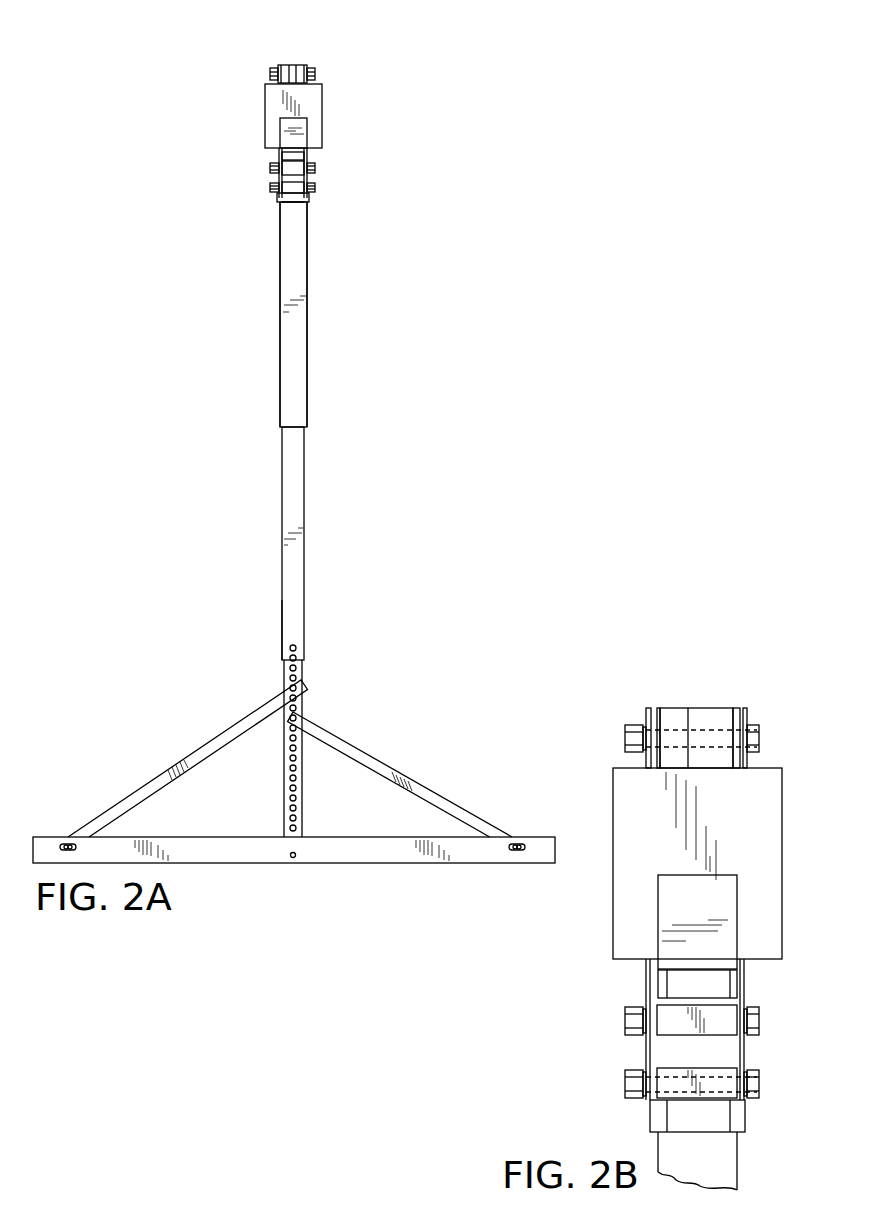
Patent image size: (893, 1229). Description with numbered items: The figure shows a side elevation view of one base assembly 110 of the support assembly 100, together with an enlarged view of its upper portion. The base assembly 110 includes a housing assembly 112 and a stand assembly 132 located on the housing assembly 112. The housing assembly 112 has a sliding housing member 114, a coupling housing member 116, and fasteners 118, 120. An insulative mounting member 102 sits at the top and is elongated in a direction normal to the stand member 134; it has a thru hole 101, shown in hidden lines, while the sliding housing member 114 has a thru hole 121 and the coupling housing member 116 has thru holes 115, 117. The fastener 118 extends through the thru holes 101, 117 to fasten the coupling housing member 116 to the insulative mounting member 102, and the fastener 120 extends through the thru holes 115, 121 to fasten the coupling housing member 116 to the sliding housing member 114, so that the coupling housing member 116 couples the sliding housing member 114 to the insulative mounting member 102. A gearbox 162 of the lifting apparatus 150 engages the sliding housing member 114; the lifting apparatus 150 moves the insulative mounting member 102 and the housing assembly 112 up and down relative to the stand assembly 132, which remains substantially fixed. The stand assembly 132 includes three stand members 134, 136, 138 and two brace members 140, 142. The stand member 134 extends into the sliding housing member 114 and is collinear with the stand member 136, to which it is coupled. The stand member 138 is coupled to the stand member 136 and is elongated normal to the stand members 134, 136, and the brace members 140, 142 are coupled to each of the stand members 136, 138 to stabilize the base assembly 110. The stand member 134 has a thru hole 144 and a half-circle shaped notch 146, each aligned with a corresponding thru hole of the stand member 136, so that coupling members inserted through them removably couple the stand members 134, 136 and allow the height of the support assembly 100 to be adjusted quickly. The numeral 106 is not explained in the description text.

In FIG. 2A, the support assembly 100 is at (182, 356).
In FIG. 2B, the support assembly 100 is at (830, 1020).
In FIG. 2B, the thru hole 101 is at (674, 727).
In FIG. 2A, the insulative mounting member 102 is at (292, 62).
In FIG. 2B, the insulative mounting member 102 is at (701, 707).
In FIG. 2A, the clamp plate 106 is at (303, 62).
In FIG. 2A, the base assembly 110 is at (351, 408).
In FIG. 2A, the housing assembly 112 is at (356, 210).
In FIG. 2B, the housing assembly 112 is at (603, 936).
In FIG. 2A, the sliding housing member 114 is at (296, 205).
In FIG. 2B, the sliding housing member 114 is at (712, 1136).
In FIG. 2B, the thru hole 115 is at (742, 1075).
In FIG. 2A, the coupling housing member 116 is at (316, 68).
In FIG. 2B, the coupling housing member 116 is at (750, 710).
In FIG. 2B, the thru hole 117 is at (744, 752).
In FIG. 2A, the fastener 118 is at (272, 74).
In FIG. 2B, the fastener 118 is at (633, 726).
In FIG. 2A, the fastener 120 is at (270, 187).
In FIG. 2B, the fastener 120 is at (625, 1085).
In FIG. 2B, the thru hole 121 is at (678, 1075).
In FIG. 2A, the stand assembly 132 is at (351, 548).
In FIG. 2A, the stand member 134 is at (284, 604).
In FIG. 2A, the stand member 136 is at (284, 676).
In FIG. 2A, the stand member 138 is at (314, 865).
In FIG. 2A, the brace member 140 is at (388, 764).
In FIG. 2A, the brace member 142 is at (174, 760).
In FIG. 2A, the thru hole 144 is at (297, 650).
In FIG. 2A, the notch 146 is at (290, 657).
In FIG. 2A, the lifting apparatus 150 is at (462, 106).
In FIG. 2A, the gearbox 162 is at (316, 114).
In FIG. 2B, the gearbox 162 is at (616, 908).